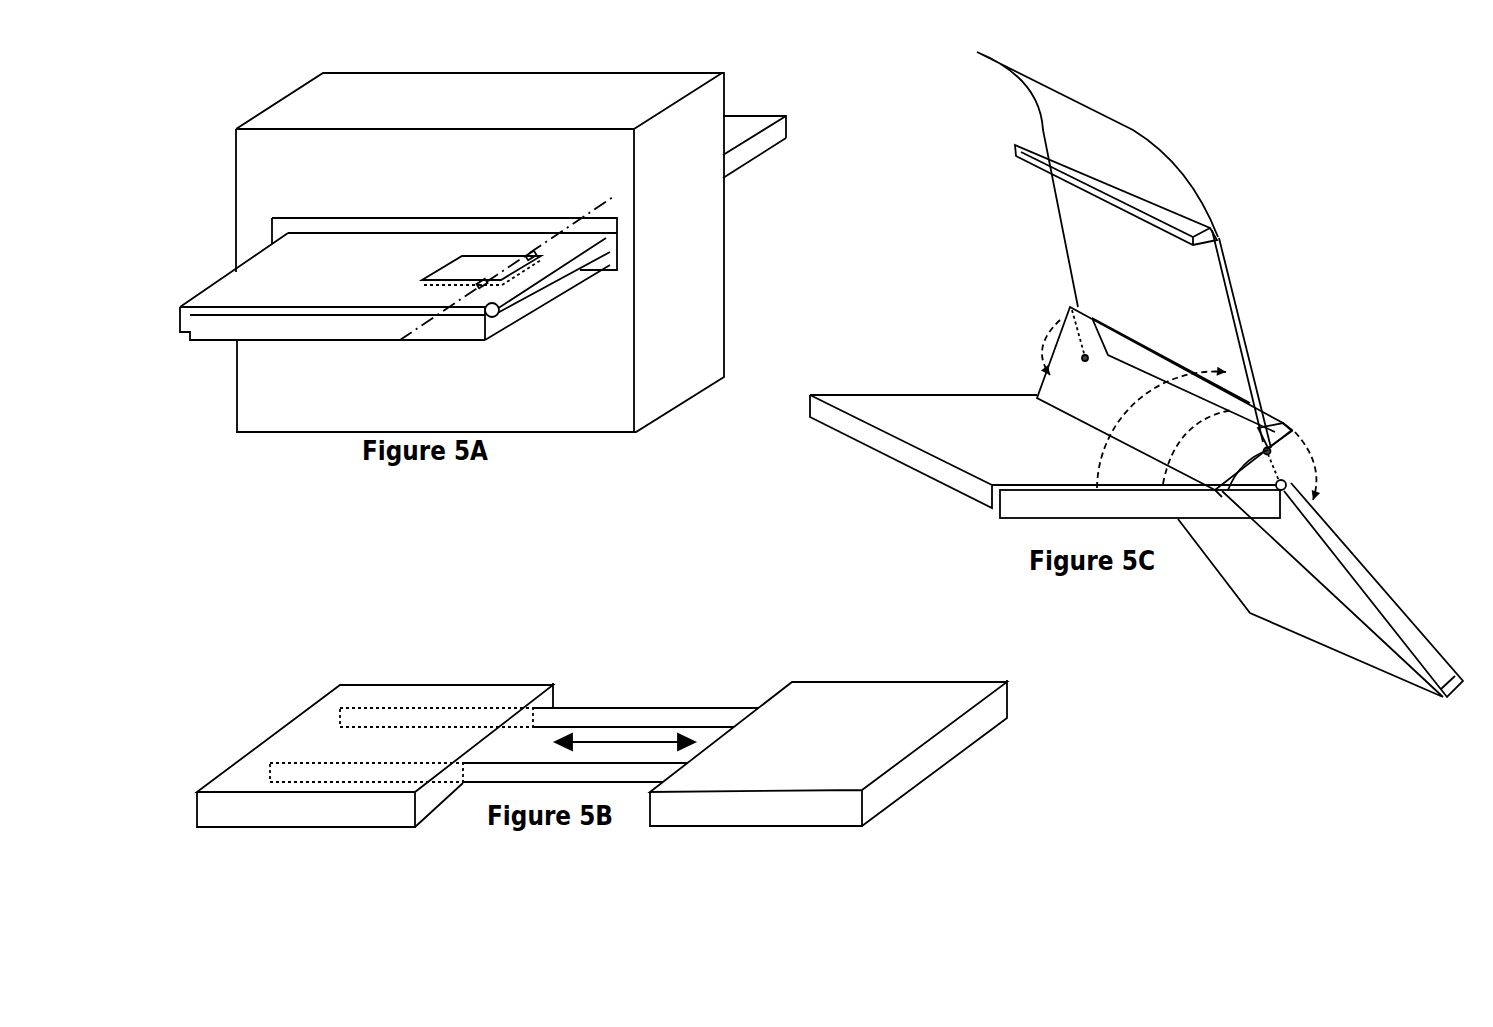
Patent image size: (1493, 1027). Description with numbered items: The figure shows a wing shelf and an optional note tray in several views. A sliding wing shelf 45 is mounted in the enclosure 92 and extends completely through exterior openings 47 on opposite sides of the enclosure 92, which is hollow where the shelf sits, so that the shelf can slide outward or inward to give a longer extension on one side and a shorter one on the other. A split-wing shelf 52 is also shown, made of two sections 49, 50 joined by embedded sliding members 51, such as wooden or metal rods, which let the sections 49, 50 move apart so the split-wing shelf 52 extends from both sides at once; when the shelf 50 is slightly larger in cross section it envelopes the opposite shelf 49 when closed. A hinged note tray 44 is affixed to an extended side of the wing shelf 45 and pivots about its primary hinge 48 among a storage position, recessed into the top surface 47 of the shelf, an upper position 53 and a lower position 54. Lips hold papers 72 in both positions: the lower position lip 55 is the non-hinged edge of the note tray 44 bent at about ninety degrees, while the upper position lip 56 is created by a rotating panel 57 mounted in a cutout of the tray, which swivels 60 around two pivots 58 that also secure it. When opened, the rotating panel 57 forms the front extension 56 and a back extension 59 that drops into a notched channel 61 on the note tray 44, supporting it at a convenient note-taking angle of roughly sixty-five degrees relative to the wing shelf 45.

In FIG. 5A, the note tray 44 is at (284, 292).
In FIG. 5C, the note tray 44 is at (970, 407).
In FIG. 5A, the wing shelf 45 is at (322, 338).
In FIG. 5C, the wing shelf 45 is at (1017, 512).
In FIG. 5A, the exterior opening 47 is at (306, 216).
In FIG. 5A, the primary hinge 48 is at (489, 315).
In FIG. 5C, the primary hinge 48 is at (1288, 480).
In FIG. 5B, the shelf section 49 is at (317, 720).
In FIG. 5B, the shelf section 50 is at (795, 705).
In FIG. 5B, the sliding members 51 is at (514, 767).
In FIG. 5B, the split-wing shelf 52 is at (675, 817).
In FIG. 5C, the upper position 53 is at (1161, 429).
In FIG. 5C, the lower position 54 is at (1197, 447).
In FIG. 5C, the lower position lip 55 is at (1011, 148).
In FIG. 5C, the upper position lip 56 is at (1274, 412).
In FIG. 5A, the rotating panel 57 is at (476, 262).
In FIG. 5C, the rotating panel 57 is at (1263, 463).
In FIG. 5A, the pivots 58 is at (488, 271).
In FIG. 5C, the pivots 58 is at (1078, 352).
In FIG. 5C, the extension 59 is at (1080, 397).
In FIG. 5C, the swivel 60 is at (1044, 347).
In FIG. 5C, the notched channel 61 is at (1222, 499).
In FIG. 5C, the papers 72 is at (1191, 172).
In FIG. 5A, the enclosure 92 is at (719, 229).